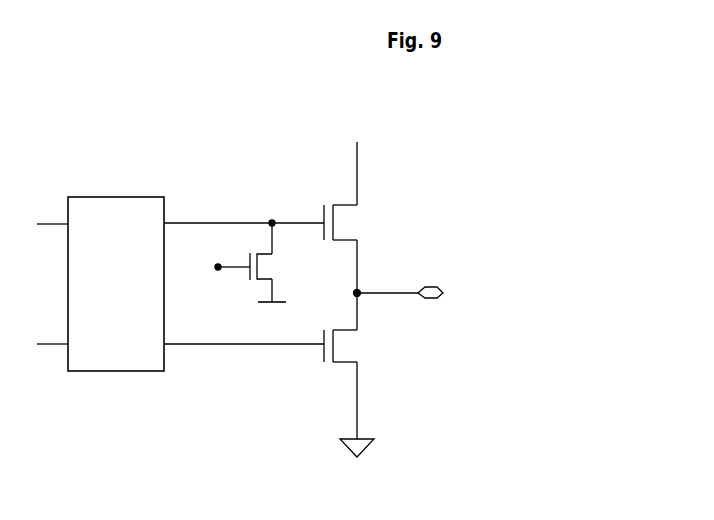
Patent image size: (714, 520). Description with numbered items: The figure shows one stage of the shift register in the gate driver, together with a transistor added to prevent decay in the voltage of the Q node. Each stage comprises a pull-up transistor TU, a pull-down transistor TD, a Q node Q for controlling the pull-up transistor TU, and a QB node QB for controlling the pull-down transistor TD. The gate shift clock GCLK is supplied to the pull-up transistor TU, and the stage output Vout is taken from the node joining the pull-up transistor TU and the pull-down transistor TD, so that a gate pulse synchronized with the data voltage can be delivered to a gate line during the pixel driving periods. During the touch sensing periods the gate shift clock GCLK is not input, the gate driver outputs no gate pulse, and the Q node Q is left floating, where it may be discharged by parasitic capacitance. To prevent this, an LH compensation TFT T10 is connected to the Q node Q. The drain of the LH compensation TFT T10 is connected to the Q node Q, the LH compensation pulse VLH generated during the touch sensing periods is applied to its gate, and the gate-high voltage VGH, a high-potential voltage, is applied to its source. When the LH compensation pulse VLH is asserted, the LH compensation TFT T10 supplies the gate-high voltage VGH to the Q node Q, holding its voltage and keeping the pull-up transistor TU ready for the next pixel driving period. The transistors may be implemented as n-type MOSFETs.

The pull-up transistor TU is at (351, 222).
The pull-down transistor TD is at (351, 346).
The LH compensation TFT T10 is at (273, 262).
The gate shift clock GCLK is at (356, 163).
The output Vout is at (421, 294).
The LH compensation pulse VLH is at (216, 268).
The gate-high voltage VGH is at (272, 315).
The Q node Q is at (232, 226).
The QB node QB is at (227, 346).